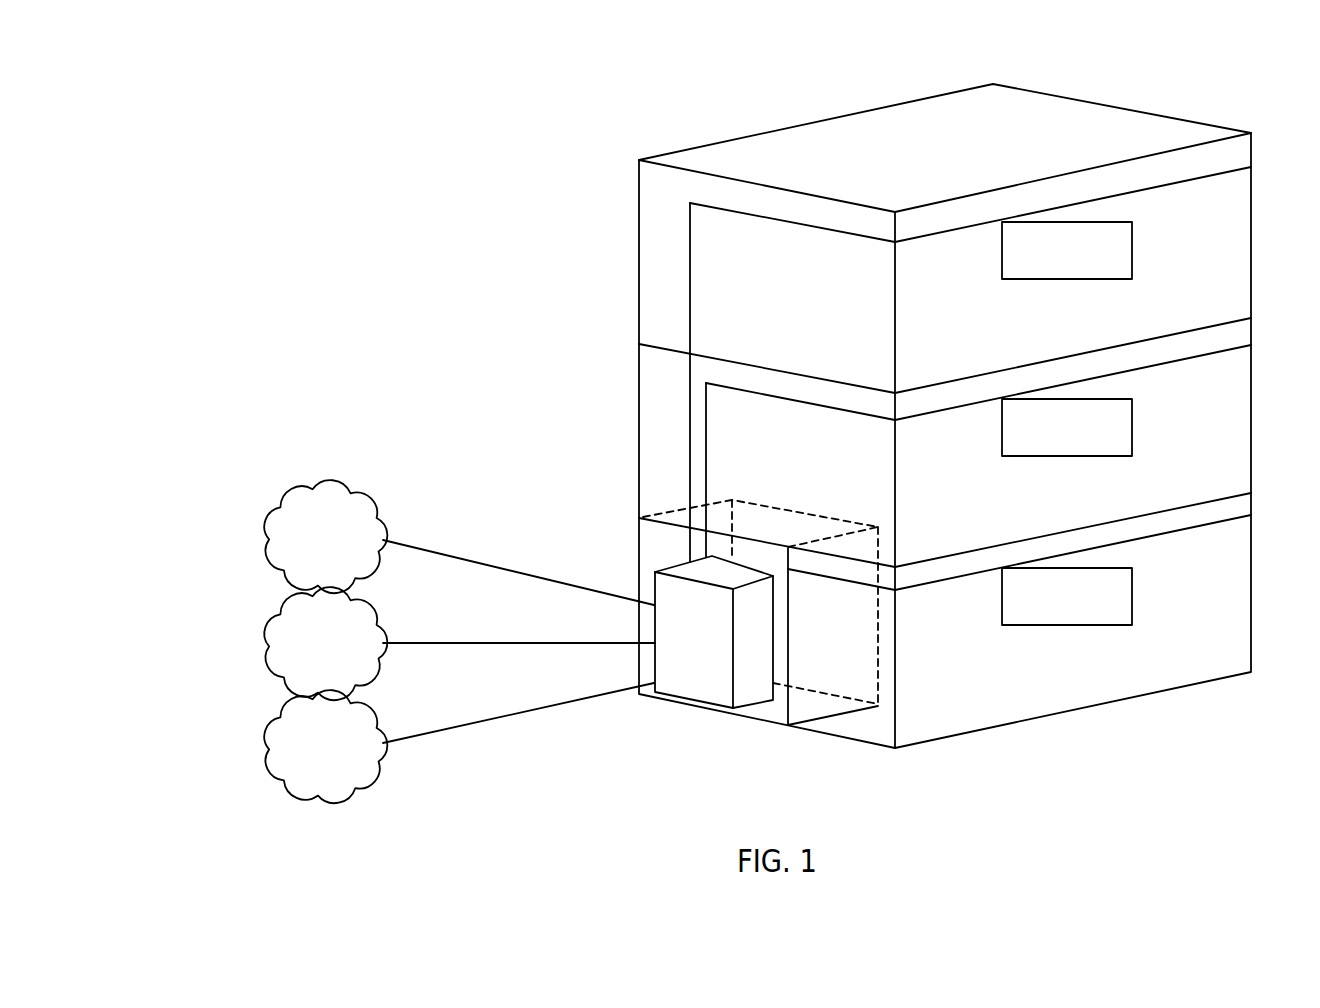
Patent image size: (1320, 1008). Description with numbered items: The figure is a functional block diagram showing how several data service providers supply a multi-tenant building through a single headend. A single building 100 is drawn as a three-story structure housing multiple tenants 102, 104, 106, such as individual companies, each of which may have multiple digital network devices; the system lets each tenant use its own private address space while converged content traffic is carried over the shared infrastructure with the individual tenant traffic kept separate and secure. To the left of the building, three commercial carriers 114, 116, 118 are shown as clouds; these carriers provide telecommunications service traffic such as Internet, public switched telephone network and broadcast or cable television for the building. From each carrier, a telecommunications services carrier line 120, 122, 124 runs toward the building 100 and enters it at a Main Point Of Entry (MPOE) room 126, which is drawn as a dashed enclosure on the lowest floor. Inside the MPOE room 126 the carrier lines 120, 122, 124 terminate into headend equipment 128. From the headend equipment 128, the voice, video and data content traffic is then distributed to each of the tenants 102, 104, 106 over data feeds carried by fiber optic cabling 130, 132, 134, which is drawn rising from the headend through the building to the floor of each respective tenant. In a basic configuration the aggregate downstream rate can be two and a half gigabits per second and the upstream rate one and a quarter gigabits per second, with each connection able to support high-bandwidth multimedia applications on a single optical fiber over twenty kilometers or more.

The building 100 is at (682, 150).
The tenant 102 is at (1022, 280).
The tenant 104 is at (1032, 458).
The tenant 106 is at (1043, 627).
The commercial carrier 114 is at (267, 538).
The commercial carrier 116 is at (267, 648).
The commercial carrier 118 is at (267, 750).
The telecommunications services carrier line 120 is at (458, 558).
The telecommunications services carrier line 122 is at (417, 642).
The telecommunications services carrier line 124 is at (453, 730).
The Main Point Of Entry (MPOE) room 126 is at (802, 512).
The headend equipment 128 is at (747, 700).
The fiber optic cabling 130 is at (944, 232).
The fiber optic cabling 132 is at (944, 410).
The fiber optic cabling 134 is at (943, 582).